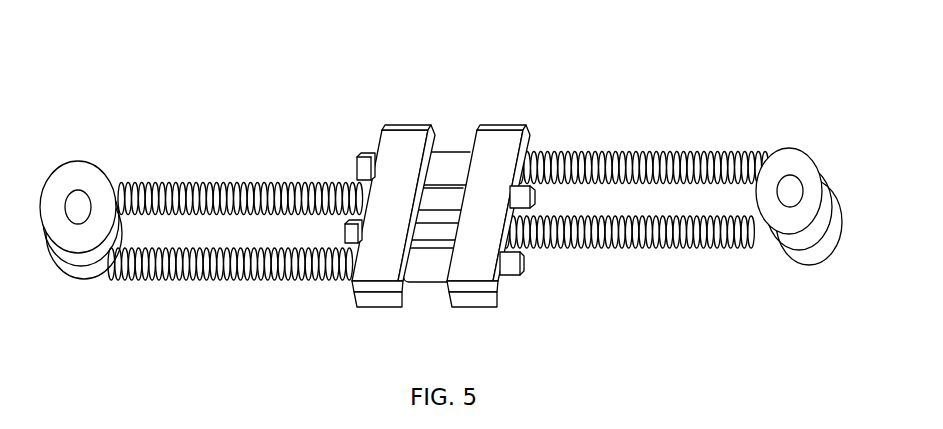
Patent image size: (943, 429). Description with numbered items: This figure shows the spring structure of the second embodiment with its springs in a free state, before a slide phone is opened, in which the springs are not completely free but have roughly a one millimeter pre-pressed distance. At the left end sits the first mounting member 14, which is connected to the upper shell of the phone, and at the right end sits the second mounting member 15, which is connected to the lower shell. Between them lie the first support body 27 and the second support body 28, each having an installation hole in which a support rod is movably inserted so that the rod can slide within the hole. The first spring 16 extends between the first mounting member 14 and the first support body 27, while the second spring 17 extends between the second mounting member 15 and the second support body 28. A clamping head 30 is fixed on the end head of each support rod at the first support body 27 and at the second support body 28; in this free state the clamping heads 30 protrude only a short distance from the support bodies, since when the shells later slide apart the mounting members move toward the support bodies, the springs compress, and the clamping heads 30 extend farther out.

The first mounting member 14 is at (77, 178).
The second mounting member 15 is at (788, 167).
The first spring 16 is at (238, 277).
The second spring 17 is at (632, 152).
The first support body 27 is at (400, 142).
The second support body 28 is at (493, 142).
The clamping head 30 is at (365, 168).